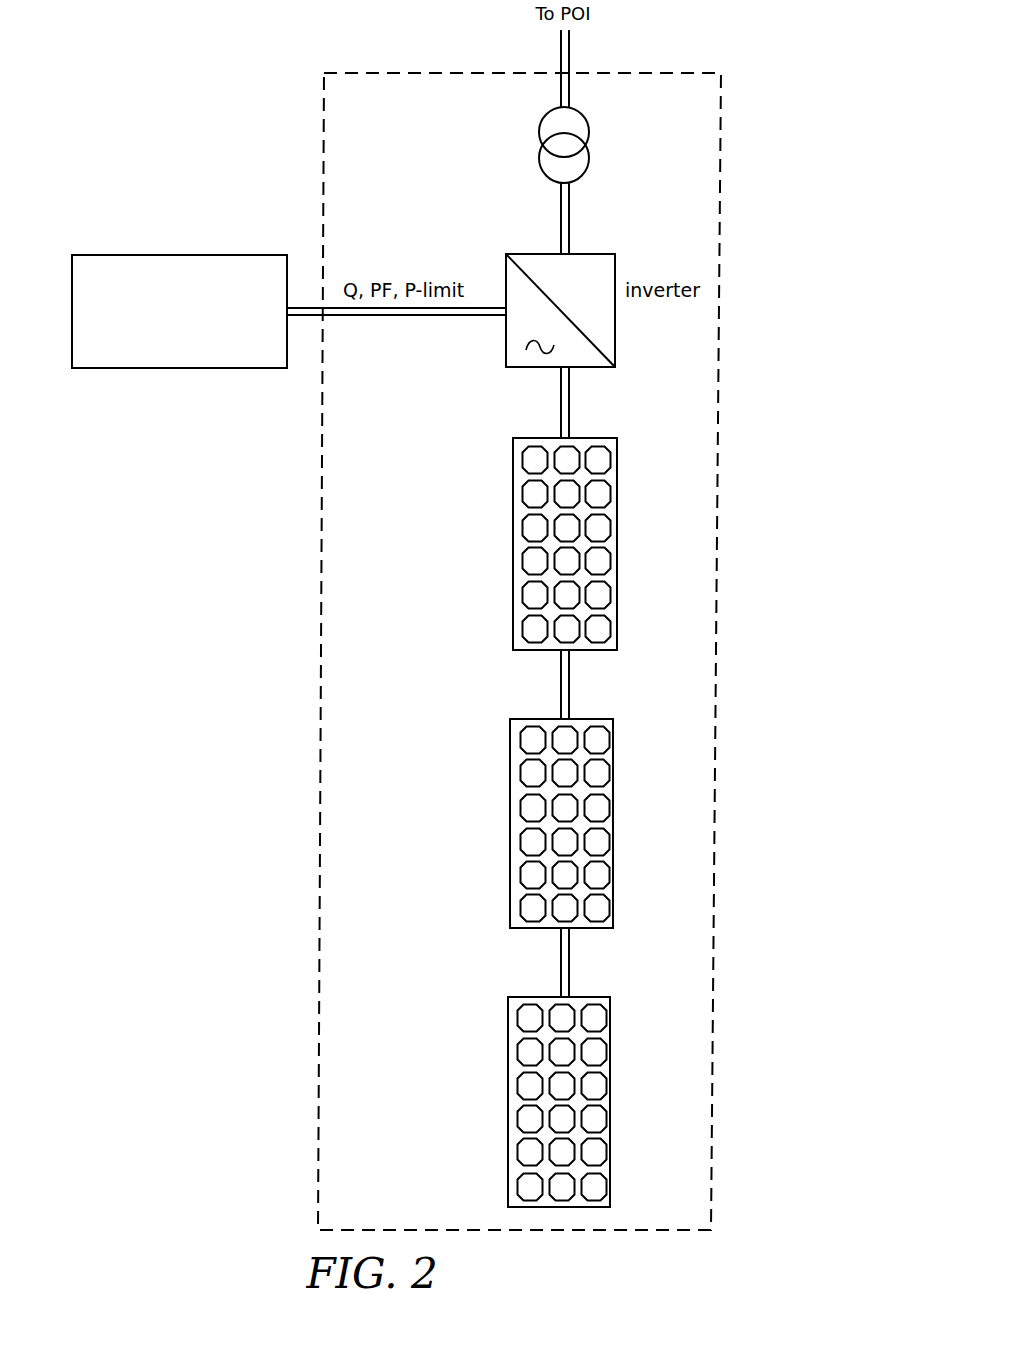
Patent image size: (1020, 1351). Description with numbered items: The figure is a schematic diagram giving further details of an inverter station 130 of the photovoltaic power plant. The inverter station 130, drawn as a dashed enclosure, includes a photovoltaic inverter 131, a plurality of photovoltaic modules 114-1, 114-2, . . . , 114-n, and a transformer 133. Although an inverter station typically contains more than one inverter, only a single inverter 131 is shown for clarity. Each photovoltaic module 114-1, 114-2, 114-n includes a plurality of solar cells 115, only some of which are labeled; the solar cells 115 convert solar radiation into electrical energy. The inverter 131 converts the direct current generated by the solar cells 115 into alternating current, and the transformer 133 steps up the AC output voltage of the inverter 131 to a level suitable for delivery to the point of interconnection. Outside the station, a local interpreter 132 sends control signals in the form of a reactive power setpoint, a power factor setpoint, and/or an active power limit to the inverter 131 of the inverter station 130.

The inverter station 130 is at (720, 203).
The photovoltaic inverter 131 is at (616, 340).
The local interpreter 132 is at (183, 255).
The transformer 133 is at (587, 145).
The photovoltaic module 114-1 is at (513, 535).
The photovoltaic module 114-2 is at (510, 820).
The photovoltaic module 114-n is at (508, 1103).
The solar cell 115 is at (535, 447).